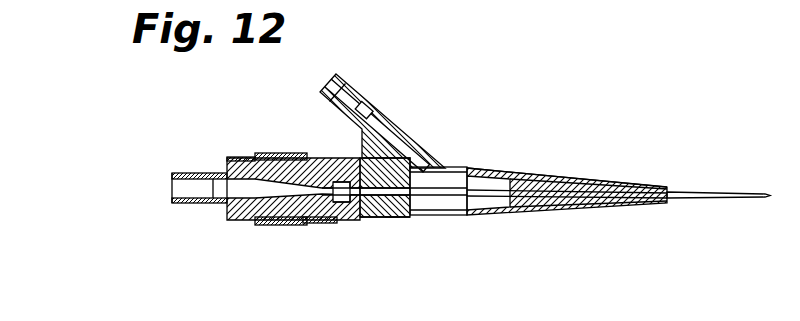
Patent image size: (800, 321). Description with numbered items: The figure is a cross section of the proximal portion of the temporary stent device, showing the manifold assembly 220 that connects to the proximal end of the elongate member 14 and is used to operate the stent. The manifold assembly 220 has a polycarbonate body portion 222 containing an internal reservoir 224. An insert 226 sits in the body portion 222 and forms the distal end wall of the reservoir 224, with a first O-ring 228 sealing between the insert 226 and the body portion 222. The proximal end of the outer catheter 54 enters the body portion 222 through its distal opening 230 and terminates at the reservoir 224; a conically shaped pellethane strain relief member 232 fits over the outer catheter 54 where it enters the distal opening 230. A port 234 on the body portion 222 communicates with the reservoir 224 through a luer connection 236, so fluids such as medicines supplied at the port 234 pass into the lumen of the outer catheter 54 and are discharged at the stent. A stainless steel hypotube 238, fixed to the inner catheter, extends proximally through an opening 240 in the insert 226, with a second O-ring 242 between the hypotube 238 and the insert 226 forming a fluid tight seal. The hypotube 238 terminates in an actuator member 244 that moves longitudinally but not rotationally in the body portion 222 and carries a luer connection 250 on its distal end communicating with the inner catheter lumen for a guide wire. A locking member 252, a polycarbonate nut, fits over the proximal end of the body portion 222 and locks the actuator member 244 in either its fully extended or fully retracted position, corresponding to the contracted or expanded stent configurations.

The elongate member 14 is at (690, 198).
The outer catheter 54 is at (555, 177).
The manifold assembly 220 is at (497, 127).
The body portion 222 is at (453, 217).
The reservoir 224 is at (452, 178).
The insert 226 is at (393, 217).
The first O-ring 228 is at (382, 220).
The distal opening 230 is at (533, 177).
The strain relief member 232 is at (570, 208).
The port 234 is at (333, 82).
The luer connection 236 is at (338, 74).
The hypotube 238 is at (441, 217).
The opening 240 is at (337, 224).
The second O-ring 242 is at (423, 166).
The actuator member 244 is at (227, 222).
The luer connection 250 is at (172, 203).
The locking member 252 is at (285, 154).